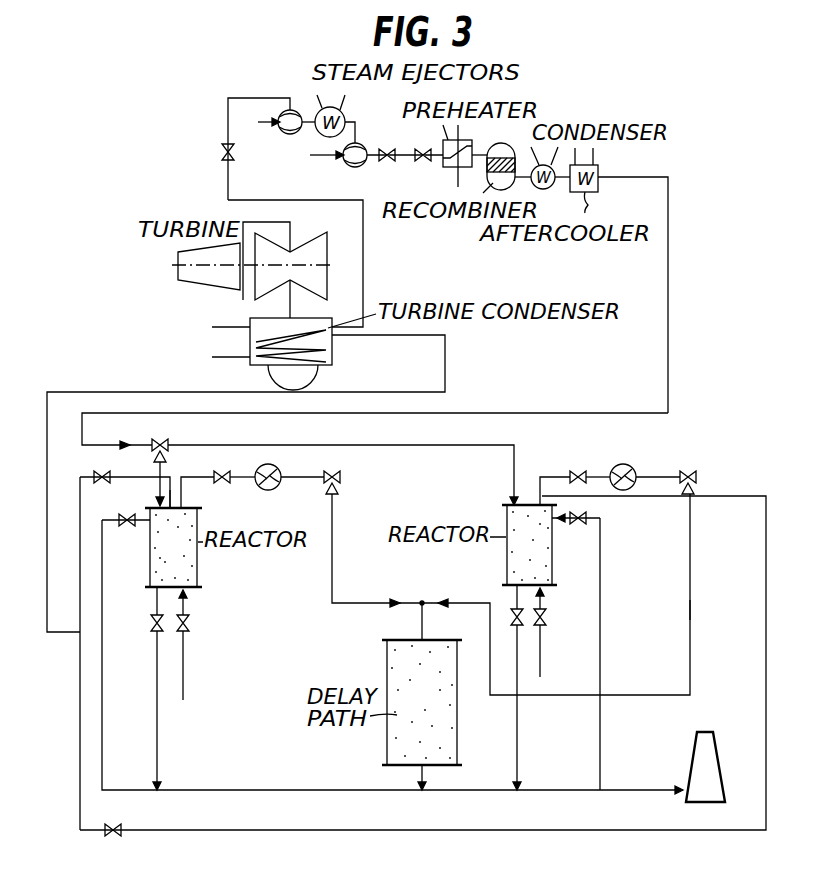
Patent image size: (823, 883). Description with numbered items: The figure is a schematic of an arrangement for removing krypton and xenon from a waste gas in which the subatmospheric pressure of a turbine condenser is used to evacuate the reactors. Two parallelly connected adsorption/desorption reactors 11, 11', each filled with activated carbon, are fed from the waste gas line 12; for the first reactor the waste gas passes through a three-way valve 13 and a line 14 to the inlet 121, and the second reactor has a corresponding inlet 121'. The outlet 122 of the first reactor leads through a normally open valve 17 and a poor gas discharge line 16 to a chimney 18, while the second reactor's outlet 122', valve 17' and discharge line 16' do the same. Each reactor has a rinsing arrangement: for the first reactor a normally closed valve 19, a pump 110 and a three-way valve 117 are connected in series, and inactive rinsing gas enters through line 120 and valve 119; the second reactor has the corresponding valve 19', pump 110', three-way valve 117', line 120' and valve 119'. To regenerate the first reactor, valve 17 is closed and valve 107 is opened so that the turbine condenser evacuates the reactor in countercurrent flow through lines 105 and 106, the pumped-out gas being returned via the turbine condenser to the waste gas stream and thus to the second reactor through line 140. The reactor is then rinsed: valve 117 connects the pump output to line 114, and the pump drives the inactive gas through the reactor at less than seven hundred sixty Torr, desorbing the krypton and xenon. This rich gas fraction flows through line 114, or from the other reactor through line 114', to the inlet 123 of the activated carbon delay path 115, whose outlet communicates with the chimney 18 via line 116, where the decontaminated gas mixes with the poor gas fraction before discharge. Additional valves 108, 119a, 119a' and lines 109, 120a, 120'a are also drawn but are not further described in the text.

The adsorption/desorption reactor 11 is at (173, 547).
The second adsorption/desorption reactor 11' is at (529, 545).
The waste gas line 12 is at (375, 431).
The three-way valve 13 is at (166, 445).
The line 14 is at (157, 466).
The poor gas discharge line 16 is at (175, 710).
The poor gas discharge line of second reactor 16' is at (536, 707).
The normally open valve 17 is at (141, 625).
The normally open valve of second reactor 17' is at (495, 621).
The chimney 18 is at (705, 767).
The normally closed valve 19 is at (234, 466).
The normally closed valve of second reactor 19' is at (575, 475).
The line 105 is at (173, 505).
The line 106 is at (120, 392).
The valve 107 is at (97, 473).
The drain valve 108 is at (108, 826).
The drain conduit 109 is at (346, 829).
The pump 110 is at (289, 489).
The pump of second reactor 110' is at (645, 464).
The line 114 is at (511, 594).
The line of second reactor 114' is at (716, 626).
The activated carbon delay path 115 is at (431, 708).
The line 116 is at (424, 774).
The three-way valve 117 is at (351, 474).
The three-way valve of second reactor 117' is at (709, 474).
The valve 119 is at (209, 612).
The valve of second reactor 119' is at (565, 610).
The side inlet valve 119a is at (129, 535).
The second side inlet valve 119a' is at (583, 532).
The line 120 is at (206, 668).
The line of second reactor 120' is at (566, 651).
The side inlet conduit 120a is at (103, 724).
The second side inlet conduit 120'a is at (632, 654).
The inlet 121 is at (144, 493).
The inlet of second reactor 121' is at (496, 485).
The outlet 122 is at (133, 601).
The outlet of second reactor 122' is at (490, 592).
The inlet 123 is at (420, 623).
The line 140 is at (234, 447).